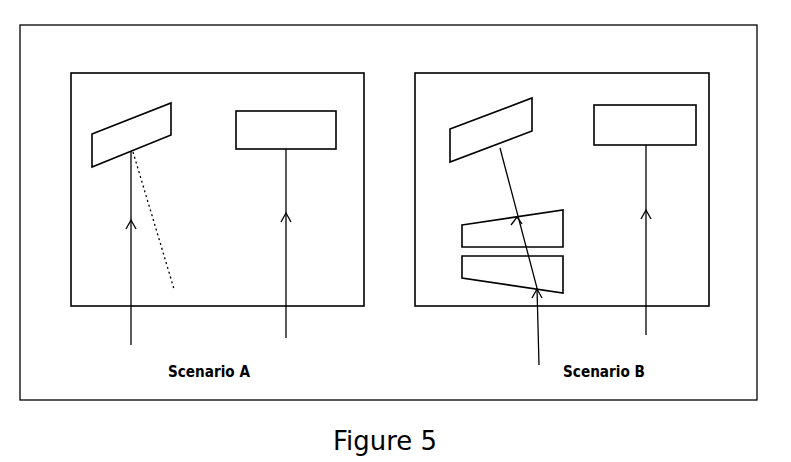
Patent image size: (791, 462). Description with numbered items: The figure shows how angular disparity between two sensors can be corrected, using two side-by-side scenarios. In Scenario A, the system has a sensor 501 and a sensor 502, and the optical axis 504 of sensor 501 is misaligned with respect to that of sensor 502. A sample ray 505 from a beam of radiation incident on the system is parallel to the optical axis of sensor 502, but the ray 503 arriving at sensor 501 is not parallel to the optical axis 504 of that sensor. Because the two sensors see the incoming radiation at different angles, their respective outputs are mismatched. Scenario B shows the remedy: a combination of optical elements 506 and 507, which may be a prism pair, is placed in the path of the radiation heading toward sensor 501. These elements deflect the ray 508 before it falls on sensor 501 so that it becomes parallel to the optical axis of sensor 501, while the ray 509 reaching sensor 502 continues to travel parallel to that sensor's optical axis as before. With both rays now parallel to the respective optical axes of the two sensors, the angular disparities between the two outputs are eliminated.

The sensor 501 is at (143, 141).
The sensor 502 is at (296, 139).
The ray 503 is at (114, 248).
The optical axis 504 is at (164, 220).
The sample ray 505 is at (303, 243).
The optical element 506 is at (516, 276).
The optical element 507 is at (508, 241).
The ray 508 is at (522, 256).
The direct signal path 509 is at (662, 240).